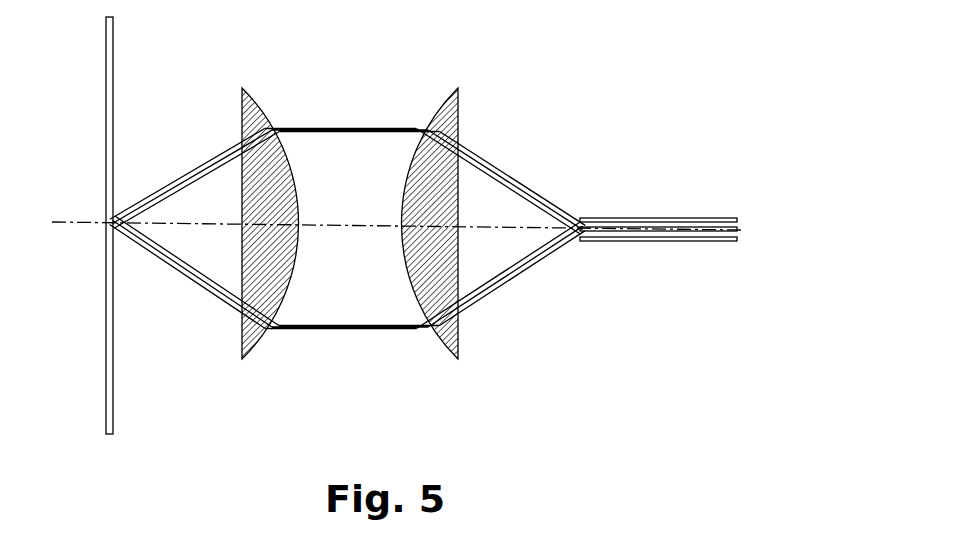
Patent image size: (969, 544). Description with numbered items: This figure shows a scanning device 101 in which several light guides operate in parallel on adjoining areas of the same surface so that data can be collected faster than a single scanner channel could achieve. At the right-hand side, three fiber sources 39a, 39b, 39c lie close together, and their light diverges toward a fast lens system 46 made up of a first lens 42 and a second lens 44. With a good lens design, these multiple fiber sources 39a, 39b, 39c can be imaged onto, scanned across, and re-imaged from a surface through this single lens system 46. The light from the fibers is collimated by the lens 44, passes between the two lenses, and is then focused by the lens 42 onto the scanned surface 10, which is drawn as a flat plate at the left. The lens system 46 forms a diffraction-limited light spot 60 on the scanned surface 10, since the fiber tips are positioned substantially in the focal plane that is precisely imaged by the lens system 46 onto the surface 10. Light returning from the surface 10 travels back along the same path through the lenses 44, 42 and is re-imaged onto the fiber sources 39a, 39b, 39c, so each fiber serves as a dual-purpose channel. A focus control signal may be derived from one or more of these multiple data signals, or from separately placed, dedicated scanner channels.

The scanned surface 10 is at (116, 44).
The light spot 60 is at (117, 240).
The lens 42 is at (284, 272).
The lens 44 is at (451, 277).
The scanning device 101 is at (384, 88).
The fast lens system 46 is at (345, 304).
The fiber source 39a is at (620, 244).
The fiber source 39b is at (613, 215).
The fiber source 39c is at (738, 229).